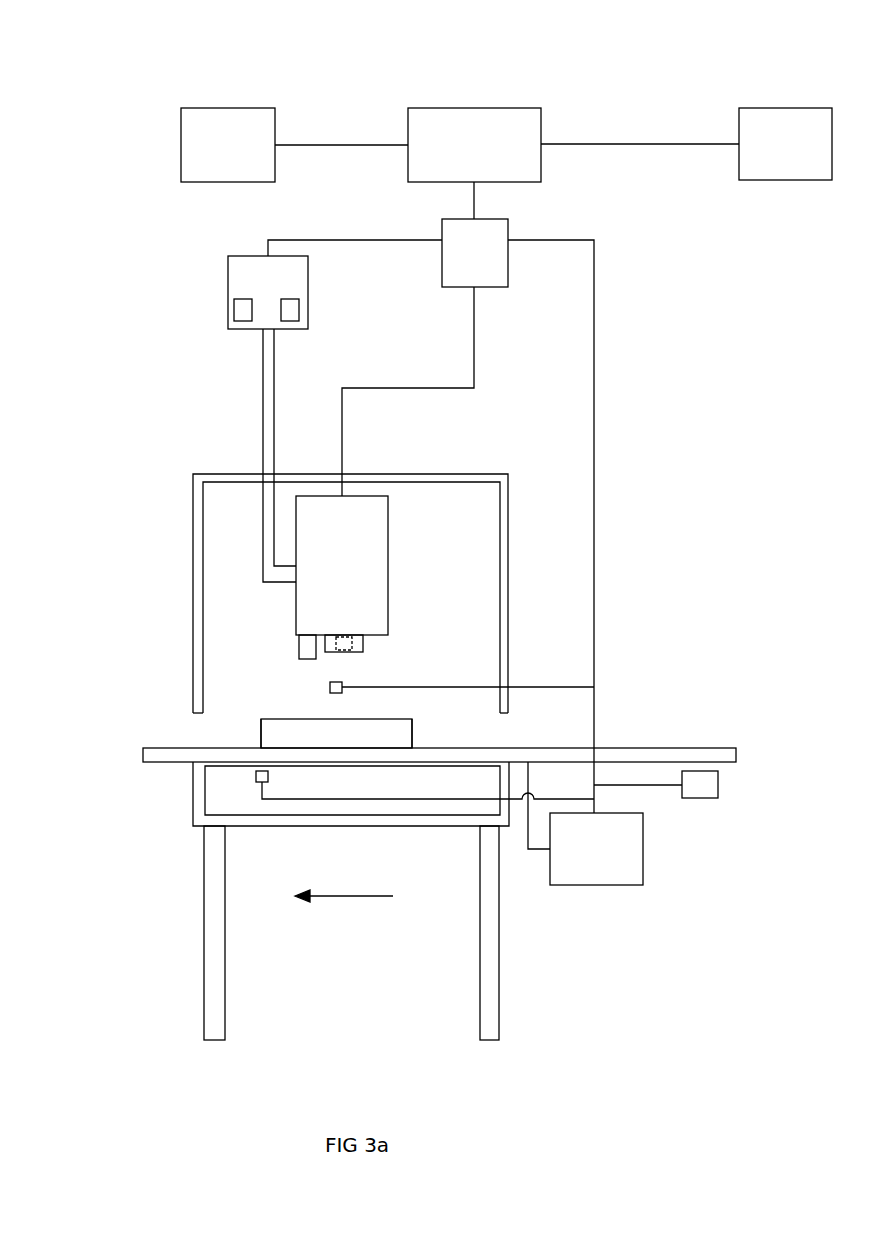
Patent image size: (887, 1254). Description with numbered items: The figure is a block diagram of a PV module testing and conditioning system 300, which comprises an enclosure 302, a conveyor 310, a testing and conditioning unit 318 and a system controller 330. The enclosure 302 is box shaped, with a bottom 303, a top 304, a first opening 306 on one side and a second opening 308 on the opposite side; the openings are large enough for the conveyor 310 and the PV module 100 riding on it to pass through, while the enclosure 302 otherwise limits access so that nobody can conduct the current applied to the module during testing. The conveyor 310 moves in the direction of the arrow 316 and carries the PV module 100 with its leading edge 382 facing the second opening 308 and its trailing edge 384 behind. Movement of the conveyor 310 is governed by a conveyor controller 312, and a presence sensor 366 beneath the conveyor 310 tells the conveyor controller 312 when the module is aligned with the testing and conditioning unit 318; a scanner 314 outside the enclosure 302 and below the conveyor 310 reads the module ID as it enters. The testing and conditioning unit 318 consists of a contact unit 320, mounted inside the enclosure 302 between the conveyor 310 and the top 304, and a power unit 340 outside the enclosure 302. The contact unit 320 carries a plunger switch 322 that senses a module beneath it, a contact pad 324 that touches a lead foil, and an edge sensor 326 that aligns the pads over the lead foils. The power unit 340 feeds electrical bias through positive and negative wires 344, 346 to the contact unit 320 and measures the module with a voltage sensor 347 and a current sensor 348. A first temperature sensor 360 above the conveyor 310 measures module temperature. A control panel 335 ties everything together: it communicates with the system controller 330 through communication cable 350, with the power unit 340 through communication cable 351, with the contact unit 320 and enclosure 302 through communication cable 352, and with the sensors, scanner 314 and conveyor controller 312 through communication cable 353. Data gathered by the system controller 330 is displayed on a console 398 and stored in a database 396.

The PV module 100 is at (320, 743).
The testing and conditioning system 300 is at (733, 62).
The enclosure 302 is at (462, 474).
The bottom 303 is at (405, 826).
The top 304 is at (487, 474).
The first opening 306 is at (508, 730).
The second opening 308 is at (195, 730).
The conveyor 310 is at (157, 764).
The conveyor controller 312 is at (595, 885).
The scanner 314 is at (700, 798).
The arrow 316 is at (335, 902).
The testing and conditioning unit 318 is at (84, 352).
The contact unit 320 is at (324, 568).
The plunger switch 322 is at (298, 645).
The first contact pad 324 is at (345, 653).
The edge sensor 326 is at (365, 640).
The system controller 330 is at (474, 108).
The control panel 335 is at (493, 287).
The power unit 340 is at (228, 292).
The positive wire 344 is at (263, 350).
The negative wire 346 is at (274, 375).
The voltage sensor 347 is at (240, 321).
The current sensor 348 is at (300, 310).
The communication cable 350 is at (475, 193).
The communication cable 351 is at (305, 240).
The communication cable 352 is at (456, 387).
The communication cable 353 is at (594, 415).
The first temperature sensor 360 is at (343, 694).
The presence sensor 366 is at (268, 776).
The leading edge 382 is at (258, 733).
The trailing edge 384 is at (412, 733).
The database 396 is at (181, 146).
The console 398 is at (786, 180).